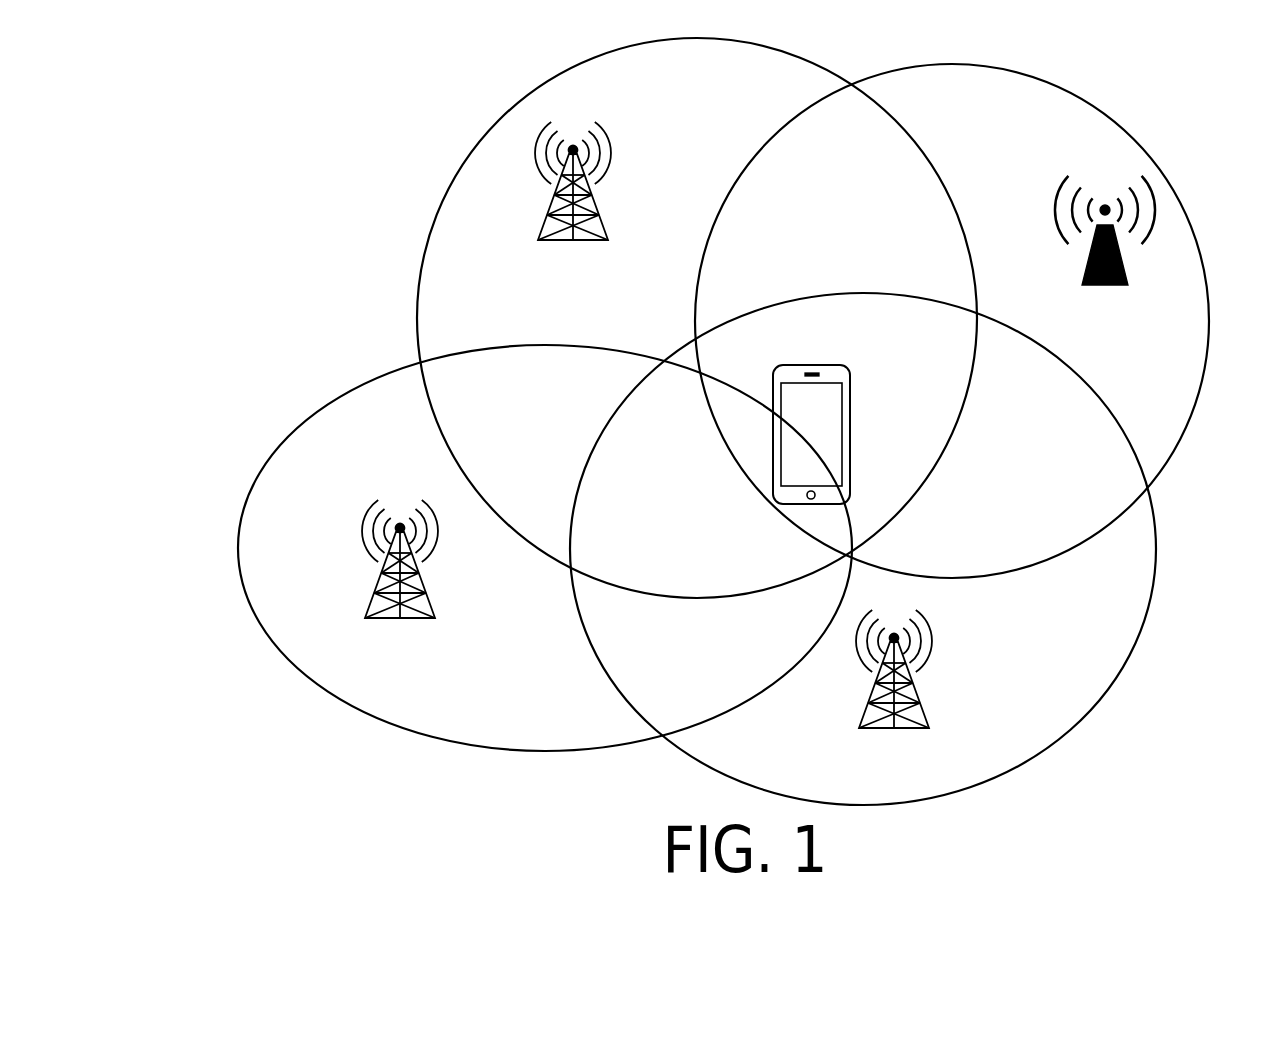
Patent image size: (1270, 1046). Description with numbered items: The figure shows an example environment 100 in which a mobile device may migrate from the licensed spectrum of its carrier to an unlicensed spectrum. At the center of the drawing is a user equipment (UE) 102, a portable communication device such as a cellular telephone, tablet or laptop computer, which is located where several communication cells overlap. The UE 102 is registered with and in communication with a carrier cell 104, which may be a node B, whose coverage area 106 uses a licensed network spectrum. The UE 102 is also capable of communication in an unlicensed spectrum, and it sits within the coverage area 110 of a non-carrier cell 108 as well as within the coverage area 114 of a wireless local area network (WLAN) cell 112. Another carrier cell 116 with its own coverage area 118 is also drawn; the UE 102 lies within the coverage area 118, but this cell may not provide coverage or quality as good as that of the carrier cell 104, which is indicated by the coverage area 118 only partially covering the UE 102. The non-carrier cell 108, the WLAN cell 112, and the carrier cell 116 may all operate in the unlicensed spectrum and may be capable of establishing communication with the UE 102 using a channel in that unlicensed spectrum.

The example environment 100 is at (267, 67).
The user equipment (UE) 102 is at (846, 352).
The carrier cell 104 is at (560, 324).
The coverage area 106 is at (674, 75).
The non-carrier cell 108 is at (882, 793).
The coverage area 110 is at (1065, 654).
The wireless local area network (WLAN) cell 112 is at (1087, 348).
The coverage area 114 is at (978, 101).
The carrier cell 116 is at (388, 704).
The coverage area 118 is at (329, 434).